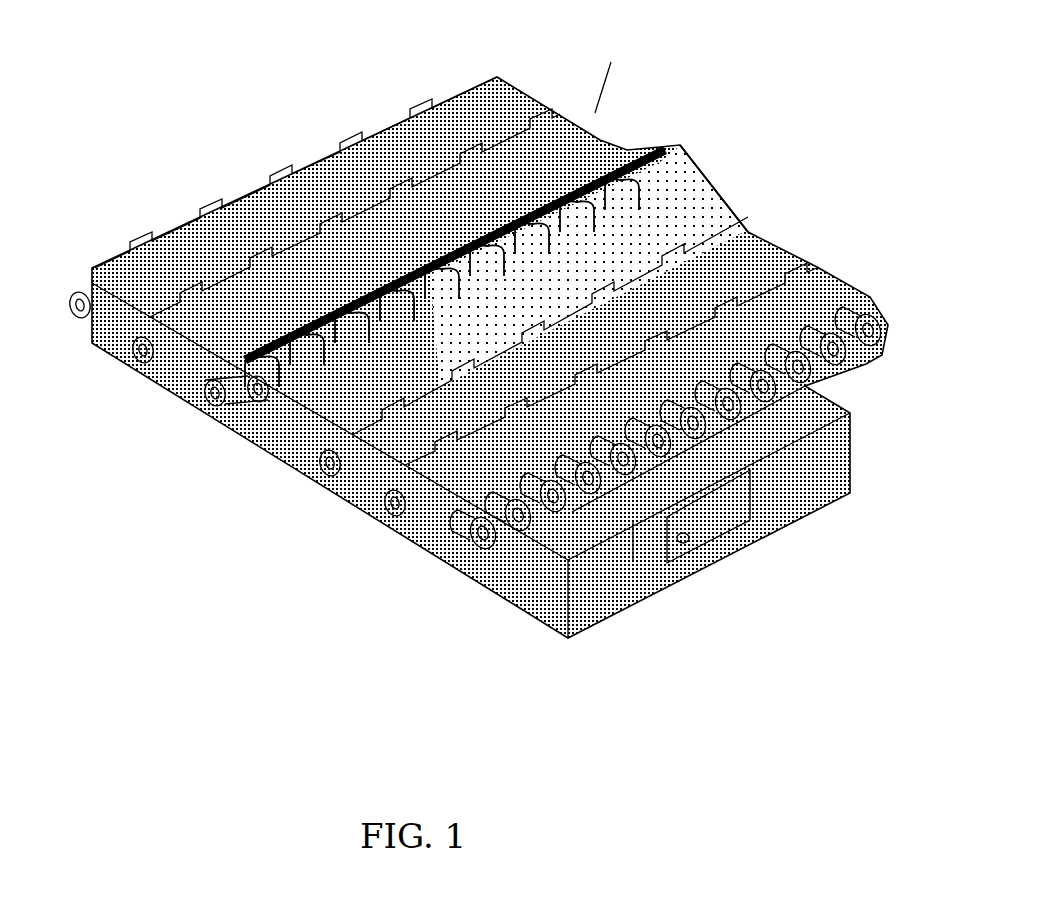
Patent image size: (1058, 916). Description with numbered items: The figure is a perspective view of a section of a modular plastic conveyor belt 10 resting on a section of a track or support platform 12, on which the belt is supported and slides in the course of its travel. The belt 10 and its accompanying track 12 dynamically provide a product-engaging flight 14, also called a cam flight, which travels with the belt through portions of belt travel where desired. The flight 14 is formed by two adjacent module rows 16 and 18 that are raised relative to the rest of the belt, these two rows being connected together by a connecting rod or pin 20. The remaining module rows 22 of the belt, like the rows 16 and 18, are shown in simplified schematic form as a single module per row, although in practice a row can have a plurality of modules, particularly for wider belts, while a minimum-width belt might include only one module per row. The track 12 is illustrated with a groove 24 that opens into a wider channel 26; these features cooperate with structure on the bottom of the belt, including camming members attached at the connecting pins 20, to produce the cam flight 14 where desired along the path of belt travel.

The conveyor belt 10 is at (719, 60).
The track or support platform 12 is at (815, 422).
The product-engaging flight 14 is at (729, 163).
The module row 16 is at (675, 142).
The module row 18 is at (735, 196).
The connecting rod or pin 20 is at (240, 413).
The module rows 22 is at (530, 84).
The groove 24 is at (703, 468).
The channel 26 is at (680, 537).